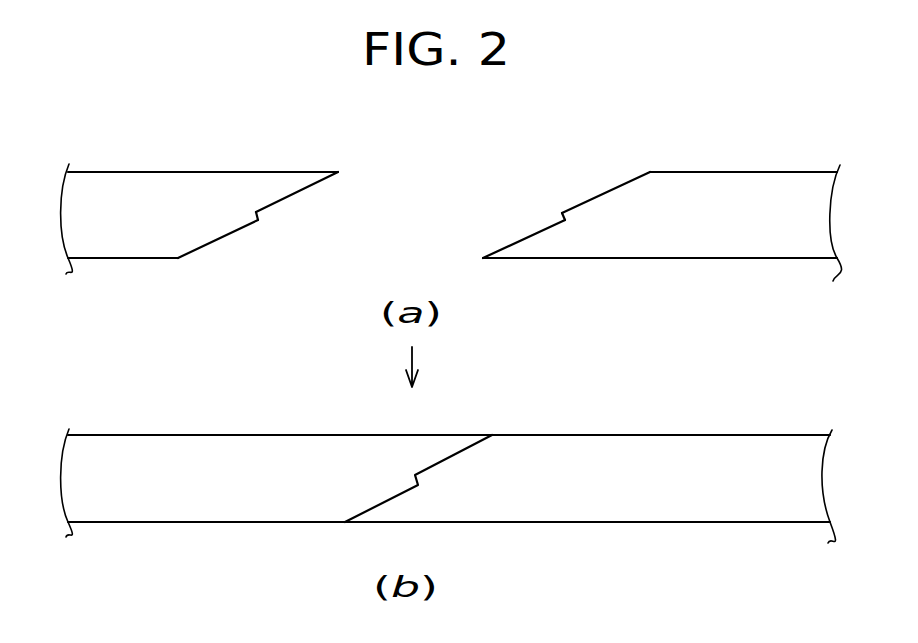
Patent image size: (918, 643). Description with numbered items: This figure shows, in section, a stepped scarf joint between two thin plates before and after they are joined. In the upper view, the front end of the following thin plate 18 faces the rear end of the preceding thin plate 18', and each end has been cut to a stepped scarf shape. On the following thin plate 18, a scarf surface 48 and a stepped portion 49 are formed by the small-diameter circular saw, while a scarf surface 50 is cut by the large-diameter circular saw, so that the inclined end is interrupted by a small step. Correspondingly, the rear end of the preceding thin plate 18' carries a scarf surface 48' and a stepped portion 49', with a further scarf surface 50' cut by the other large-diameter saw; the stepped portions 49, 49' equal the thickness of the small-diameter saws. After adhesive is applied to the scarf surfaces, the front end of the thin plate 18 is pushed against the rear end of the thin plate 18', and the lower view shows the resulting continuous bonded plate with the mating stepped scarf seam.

The following thin plate 18 is at (199, 191).
The scarf surface 48 is at (318, 201).
The stepped portion 49 is at (220, 218).
The scarf surface 50 is at (259, 254).
The preceding thin plate 18' is at (662, 189).
The scarf surface 48' is at (516, 215).
The stepped portion 49' is at (609, 230).
The scarf surface 50' is at (604, 171).